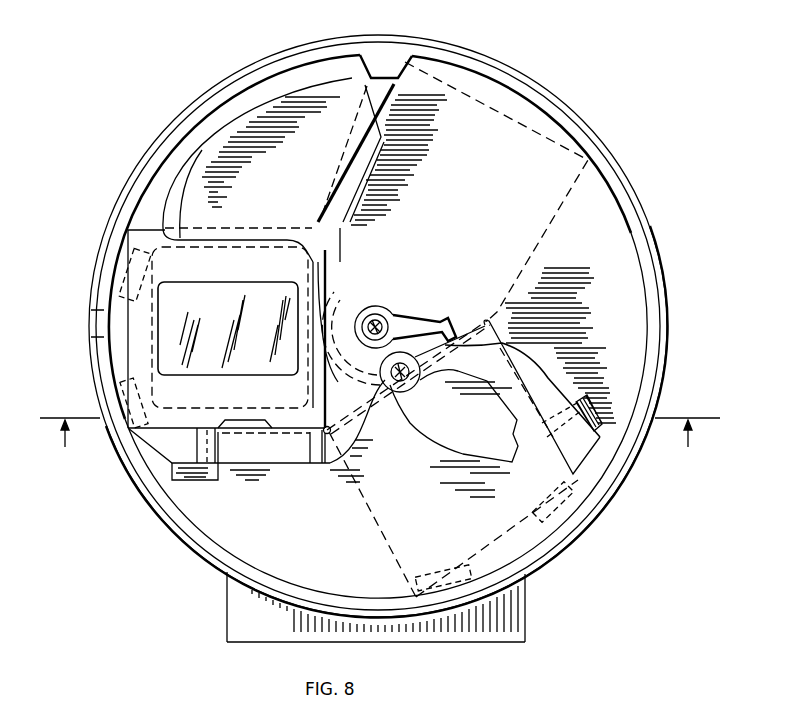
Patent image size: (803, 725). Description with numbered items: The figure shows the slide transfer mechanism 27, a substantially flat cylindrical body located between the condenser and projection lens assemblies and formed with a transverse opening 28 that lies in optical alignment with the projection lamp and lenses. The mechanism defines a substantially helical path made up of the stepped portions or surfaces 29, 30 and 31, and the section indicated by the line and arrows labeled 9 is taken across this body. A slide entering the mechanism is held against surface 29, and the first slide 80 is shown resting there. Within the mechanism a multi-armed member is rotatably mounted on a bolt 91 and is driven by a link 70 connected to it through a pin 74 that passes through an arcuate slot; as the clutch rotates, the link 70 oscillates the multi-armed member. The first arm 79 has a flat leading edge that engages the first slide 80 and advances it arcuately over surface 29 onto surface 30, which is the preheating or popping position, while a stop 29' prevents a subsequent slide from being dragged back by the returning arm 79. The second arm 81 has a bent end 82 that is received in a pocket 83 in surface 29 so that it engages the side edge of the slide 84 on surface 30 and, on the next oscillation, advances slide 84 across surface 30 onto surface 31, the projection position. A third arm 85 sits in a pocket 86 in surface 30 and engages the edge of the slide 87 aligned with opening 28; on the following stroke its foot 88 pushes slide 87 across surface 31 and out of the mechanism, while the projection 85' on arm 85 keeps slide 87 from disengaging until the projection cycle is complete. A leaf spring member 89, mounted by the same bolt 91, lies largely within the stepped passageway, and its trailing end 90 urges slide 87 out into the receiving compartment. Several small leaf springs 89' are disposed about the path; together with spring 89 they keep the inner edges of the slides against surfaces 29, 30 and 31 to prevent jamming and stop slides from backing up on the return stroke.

The slide transfer mechanism 27 is at (262, 47).
The stop 29' is at (388, 108).
The stepped portion (surface) 30 is at (318, 557).
The section line 9- 9 is at (380, 446).
The stepped portion (surface) 31 is at (180, 182).
The first arm 79 is at (296, 177).
The trailing end 90 is at (330, 267).
The first slide 80 is at (465, 201).
The stepped portion (surface) 29 is at (560, 345).
The slide 87 is at (200, 402).
The transverse opening 28 is at (185, 247).
The small leaf springs 89' is at (305, 407).
The foot 88 is at (195, 456).
The pocket 86 is at (198, 472).
The projection 85' is at (255, 405).
The third arm 85 is at (291, 456).
The bolt 91 is at (370, 326).
The leaf spring member 89 is at (399, 323).
The link 70 is at (476, 444).
The pin 74 is at (381, 435).
The slide 84 is at (475, 499).
The bent end 82 is at (583, 454).
The second arm 81 is at (547, 378).
The pocket 83 is at (590, 420).